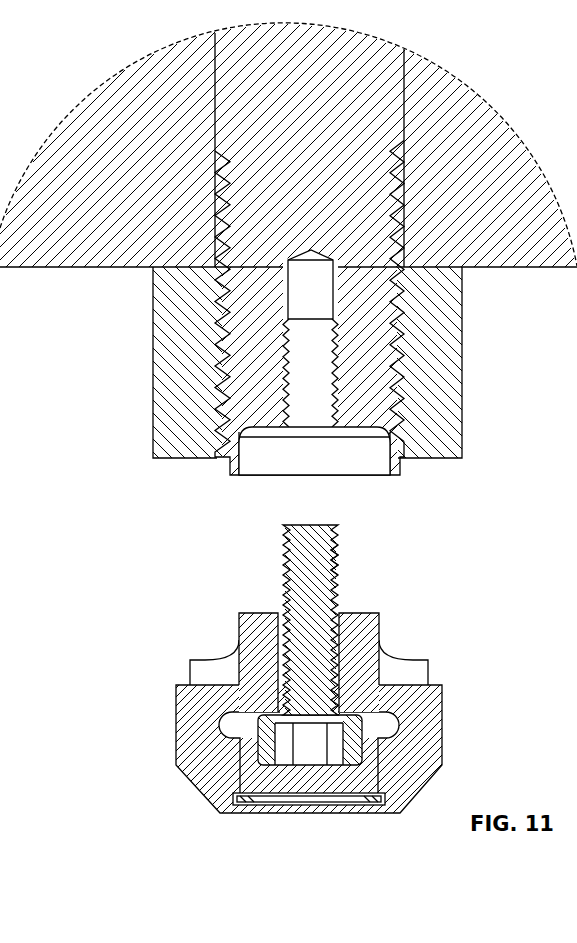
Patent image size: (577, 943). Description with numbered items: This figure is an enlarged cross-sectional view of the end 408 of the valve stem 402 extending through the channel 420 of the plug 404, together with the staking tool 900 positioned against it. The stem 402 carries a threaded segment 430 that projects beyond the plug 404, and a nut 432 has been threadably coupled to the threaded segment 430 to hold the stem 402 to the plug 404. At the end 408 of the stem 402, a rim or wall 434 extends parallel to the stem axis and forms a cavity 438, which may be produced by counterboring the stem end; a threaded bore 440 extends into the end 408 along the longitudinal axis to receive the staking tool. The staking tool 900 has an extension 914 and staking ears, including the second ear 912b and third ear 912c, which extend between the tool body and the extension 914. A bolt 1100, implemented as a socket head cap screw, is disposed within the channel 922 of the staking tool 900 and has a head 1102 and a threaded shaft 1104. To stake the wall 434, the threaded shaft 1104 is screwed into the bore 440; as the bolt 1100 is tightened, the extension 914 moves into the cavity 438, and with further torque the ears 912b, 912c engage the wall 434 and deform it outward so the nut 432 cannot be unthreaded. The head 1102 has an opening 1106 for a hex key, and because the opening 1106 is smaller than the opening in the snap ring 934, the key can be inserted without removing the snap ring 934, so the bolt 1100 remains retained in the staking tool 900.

The stem 402 is at (254, 42).
The plug 404 is at (95, 112).
The channel 420 is at (408, 60).
The threaded segment 430 is at (403, 350).
The nut 432 is at (165, 350).
The wall 434 is at (229, 466).
The end 408 is at (265, 432).
The cavity 438 is at (327, 463).
The bore 440 is at (340, 385).
The staking tool 900 is at (188, 710).
The second ear 912b is at (414, 661).
The third ear 912c is at (204, 661).
The extension 914 is at (364, 630).
The channel 922 is at (277, 610).
The snap ring 934 is at (368, 803).
The bolt 1100 is at (338, 554).
The head 1102 is at (260, 752).
The threaded shaft 1104 is at (326, 565).
The opening 1106 is at (304, 772).